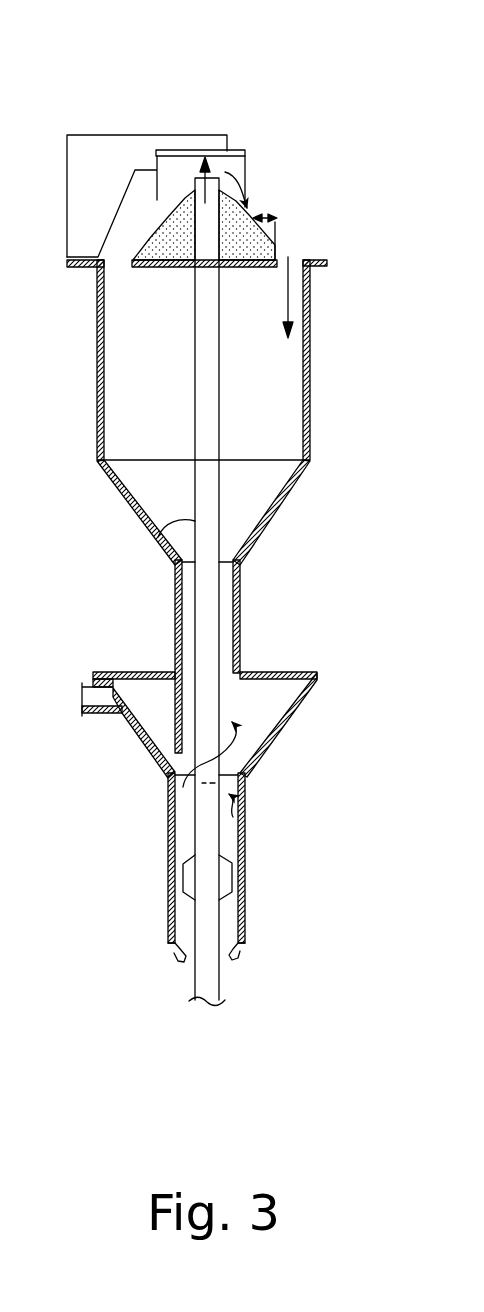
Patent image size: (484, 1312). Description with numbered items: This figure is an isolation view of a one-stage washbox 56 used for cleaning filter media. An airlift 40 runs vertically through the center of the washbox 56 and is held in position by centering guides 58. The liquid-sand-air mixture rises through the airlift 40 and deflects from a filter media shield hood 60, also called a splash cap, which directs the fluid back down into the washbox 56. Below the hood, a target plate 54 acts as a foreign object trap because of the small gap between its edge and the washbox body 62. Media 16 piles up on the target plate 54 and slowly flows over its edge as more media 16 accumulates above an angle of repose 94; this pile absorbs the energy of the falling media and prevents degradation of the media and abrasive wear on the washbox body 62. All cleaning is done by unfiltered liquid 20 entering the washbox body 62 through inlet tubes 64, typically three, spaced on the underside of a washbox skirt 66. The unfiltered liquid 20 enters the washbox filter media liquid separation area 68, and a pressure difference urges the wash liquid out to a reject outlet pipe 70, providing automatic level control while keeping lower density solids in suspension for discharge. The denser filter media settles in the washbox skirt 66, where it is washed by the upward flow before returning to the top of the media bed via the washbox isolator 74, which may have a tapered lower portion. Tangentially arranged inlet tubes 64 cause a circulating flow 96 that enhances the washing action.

The media 16 is at (244, 237).
The unfiltered liquid 20 is at (172, 976).
The airlift 40 is at (158, 537).
The target plate 54 is at (172, 267).
The one-stage washbox 56 is at (280, 137).
The centering guides 58 is at (183, 862).
The filter media shield hood 60 is at (247, 165).
The washbox body 62 is at (97, 383).
The inlet tubes 64 is at (246, 945).
The washbox skirt 66 is at (245, 872).
The washbox filter media liquid separation area 68 is at (273, 690).
The reject outlet pipe 70 is at (82, 695).
The washbox isolator 74 is at (170, 948).
The angle of repose 94 is at (277, 218).
The circulating flow 96 is at (193, 851).